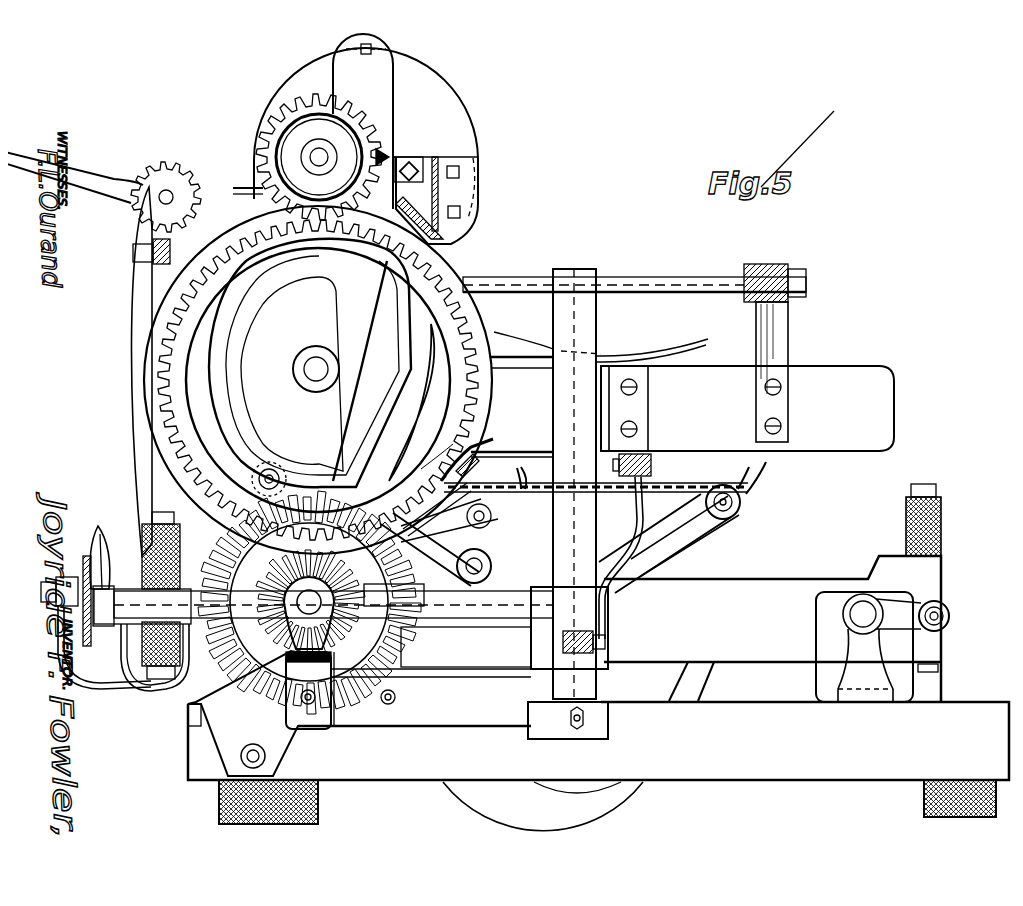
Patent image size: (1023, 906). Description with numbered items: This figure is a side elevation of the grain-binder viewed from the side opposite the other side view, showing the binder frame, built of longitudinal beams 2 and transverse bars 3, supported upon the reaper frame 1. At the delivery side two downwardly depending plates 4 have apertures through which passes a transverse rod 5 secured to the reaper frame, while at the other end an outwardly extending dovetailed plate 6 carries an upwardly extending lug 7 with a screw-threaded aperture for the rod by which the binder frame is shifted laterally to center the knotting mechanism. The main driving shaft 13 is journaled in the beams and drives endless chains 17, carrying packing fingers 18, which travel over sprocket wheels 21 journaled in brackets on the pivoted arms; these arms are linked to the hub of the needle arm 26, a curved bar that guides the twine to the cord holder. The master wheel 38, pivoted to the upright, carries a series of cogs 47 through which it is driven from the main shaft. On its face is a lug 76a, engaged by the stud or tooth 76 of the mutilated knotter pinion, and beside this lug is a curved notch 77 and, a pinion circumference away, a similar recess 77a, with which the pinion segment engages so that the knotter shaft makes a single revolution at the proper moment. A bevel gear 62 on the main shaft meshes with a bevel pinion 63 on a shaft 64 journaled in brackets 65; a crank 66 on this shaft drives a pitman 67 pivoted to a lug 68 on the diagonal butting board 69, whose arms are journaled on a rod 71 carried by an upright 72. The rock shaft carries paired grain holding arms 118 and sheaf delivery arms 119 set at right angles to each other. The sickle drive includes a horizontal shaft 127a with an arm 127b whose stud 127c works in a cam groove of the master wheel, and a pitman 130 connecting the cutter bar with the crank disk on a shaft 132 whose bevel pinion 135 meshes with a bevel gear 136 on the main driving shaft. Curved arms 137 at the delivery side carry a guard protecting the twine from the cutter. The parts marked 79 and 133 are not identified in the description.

The reaper frame 1 is at (598, 743).
The longitudinal beams 2 is at (938, 525).
The transverse bars 3 is at (772, 629).
The downwardly depending plates 4 is at (259, 713).
The transverse rod 5 is at (245, 757).
The dovetailed plate 6 is at (902, 690).
The lug 7 is at (882, 647).
The main driving shaft 13 is at (300, 615).
The endless chains 17 is at (545, 497).
The packing fingers 18 is at (773, 486).
The sprocket wheels 21 is at (470, 524).
The needle arm 26 is at (543, 806).
The master wheel 38 is at (150, 388).
The cogs 47 is at (200, 468).
The bevel gear 62 is at (305, 560).
The bevel pinion 63 is at (326, 634).
The shaft 64 is at (472, 612).
The brackets 65 is at (405, 650).
The crank 66 is at (578, 656).
The pitman 67 is at (636, 520).
The lug 68 is at (645, 458).
The butting board 69 is at (747, 408).
The rod or bar 71 is at (634, 280).
The upright 72 is at (568, 504).
The stud or tooth 76 is at (395, 160).
The lug 76a is at (472, 470).
The curved notch or recess 77 is at (445, 442).
The recess 77a is at (440, 232).
The hanger 79 is at (790, 350).
The holding arms 118 is at (104, 205).
The delivery arms 119 is at (134, 330).
The horizontal shaft 127a is at (192, 388).
The arm 127b is at (440, 560).
The stud 127c is at (272, 468).
The pitman 130 is at (130, 655).
The shaft 132 is at (85, 560).
The collar 133 is at (62, 578).
The bevel pinion 135 is at (190, 680).
The bevel gear 136 is at (178, 595).
The curved arms 137 is at (70, 688).